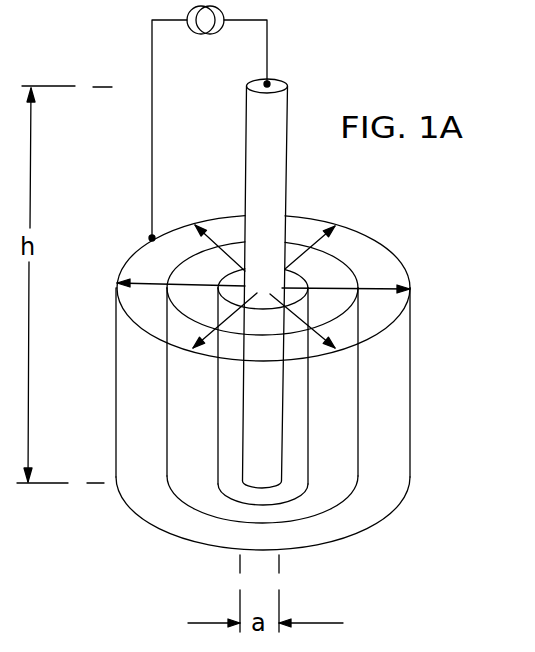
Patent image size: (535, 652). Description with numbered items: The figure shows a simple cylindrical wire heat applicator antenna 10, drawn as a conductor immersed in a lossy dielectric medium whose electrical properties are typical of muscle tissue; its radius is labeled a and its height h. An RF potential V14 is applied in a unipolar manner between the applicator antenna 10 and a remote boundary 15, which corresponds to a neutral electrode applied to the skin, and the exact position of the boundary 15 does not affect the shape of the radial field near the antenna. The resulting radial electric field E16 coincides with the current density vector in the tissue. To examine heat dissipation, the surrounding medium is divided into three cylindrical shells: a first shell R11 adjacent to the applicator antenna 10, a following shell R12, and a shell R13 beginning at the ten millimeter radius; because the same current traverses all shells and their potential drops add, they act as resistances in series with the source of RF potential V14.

The applicator antenna 10 is at (246, 150).
The RF potential V14 is at (209, 123).
The remote boundary 15 is at (383, 242).
The electric field E16 is at (316, 220).
The first shell R11 is at (244, 305).
The shell R12 is at (372, 275).
The shell R13 is at (408, 278).